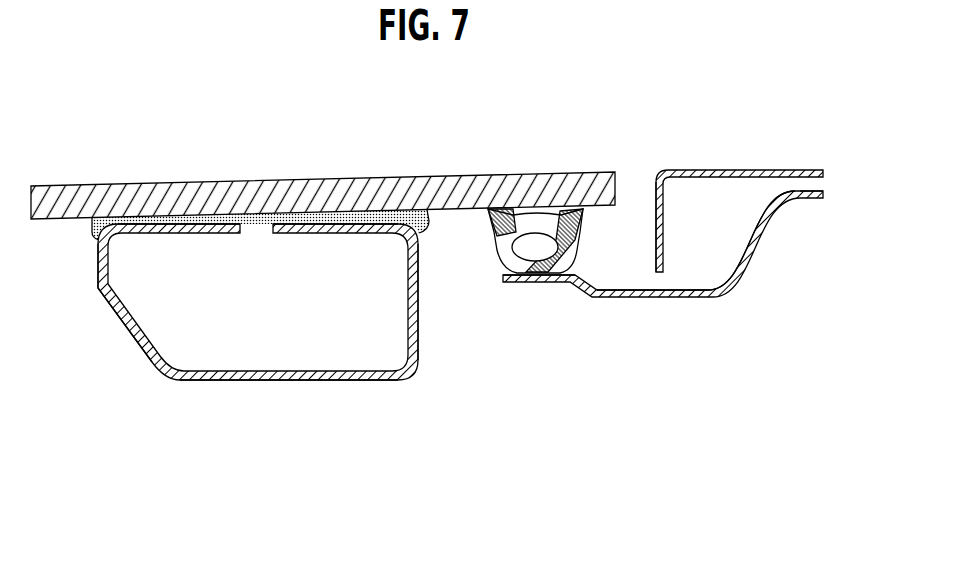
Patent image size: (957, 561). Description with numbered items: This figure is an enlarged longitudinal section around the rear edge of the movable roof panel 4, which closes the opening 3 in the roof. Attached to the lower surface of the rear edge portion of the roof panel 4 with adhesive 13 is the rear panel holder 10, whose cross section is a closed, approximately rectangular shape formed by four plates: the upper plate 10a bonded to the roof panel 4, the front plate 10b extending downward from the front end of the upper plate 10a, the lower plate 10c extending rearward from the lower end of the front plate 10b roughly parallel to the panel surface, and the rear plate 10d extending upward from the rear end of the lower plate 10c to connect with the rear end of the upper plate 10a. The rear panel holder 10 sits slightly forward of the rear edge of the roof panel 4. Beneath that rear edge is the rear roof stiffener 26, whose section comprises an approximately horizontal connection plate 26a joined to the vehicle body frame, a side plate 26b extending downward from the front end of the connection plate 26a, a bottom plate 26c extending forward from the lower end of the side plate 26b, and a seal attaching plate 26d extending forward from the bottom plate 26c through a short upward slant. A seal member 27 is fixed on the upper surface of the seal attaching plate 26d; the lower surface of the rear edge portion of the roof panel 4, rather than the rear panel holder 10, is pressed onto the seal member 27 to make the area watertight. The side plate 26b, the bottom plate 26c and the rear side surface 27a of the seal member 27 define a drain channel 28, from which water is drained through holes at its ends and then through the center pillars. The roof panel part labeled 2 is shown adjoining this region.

The roof panel 2 is at (757, 171).
The opening 3 is at (656, 195).
The roof panel 4 is at (164, 192).
The rear panel holder 10 is at (220, 401).
The upper plate 10a is at (326, 233).
The front plate 10b is at (98, 275).
The lower plate 10c is at (297, 380).
The rear plate 10d is at (408, 307).
The adhesive 13 is at (292, 218).
The rear roof stiffener 26 is at (593, 313).
The connection plate 26a is at (811, 200).
The side plate 26b is at (752, 248).
The bottom plate 26c is at (667, 298).
The seal attaching plate 26d is at (535, 283).
The seal member 27 is at (543, 241).
The rear side surface 27a is at (580, 247).
The drain channel 28 is at (642, 280).